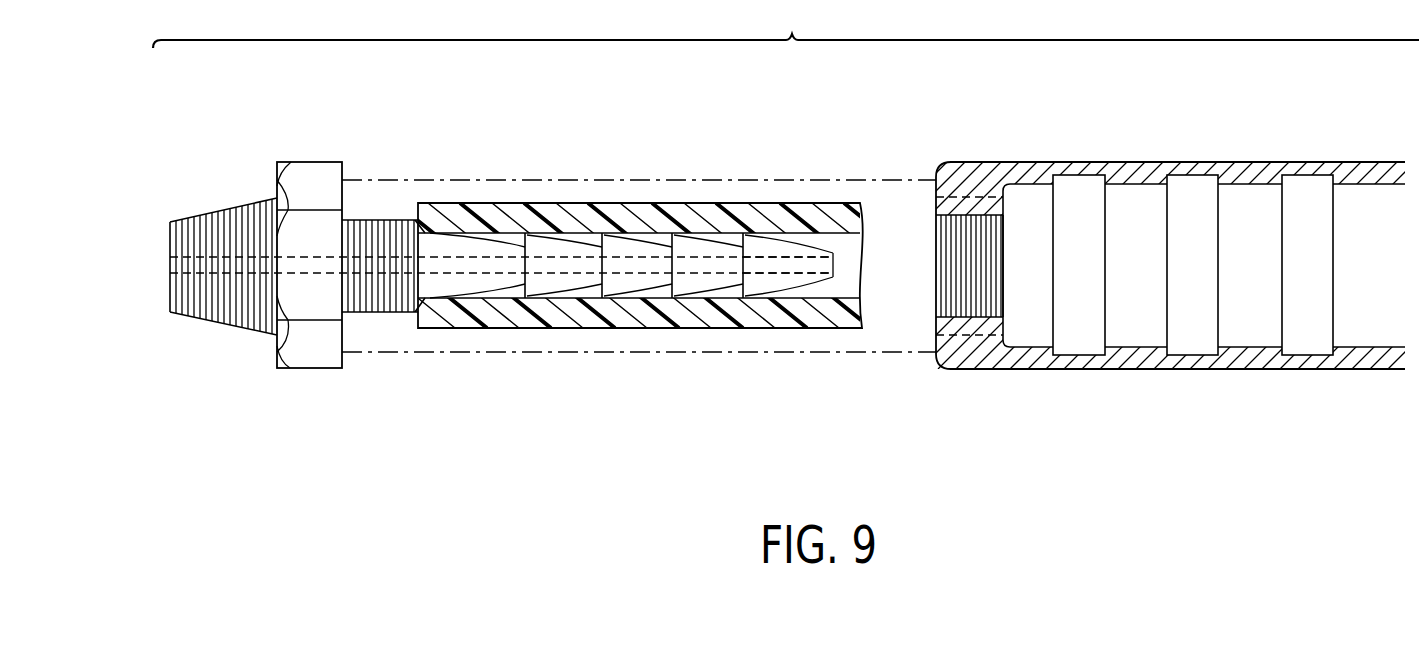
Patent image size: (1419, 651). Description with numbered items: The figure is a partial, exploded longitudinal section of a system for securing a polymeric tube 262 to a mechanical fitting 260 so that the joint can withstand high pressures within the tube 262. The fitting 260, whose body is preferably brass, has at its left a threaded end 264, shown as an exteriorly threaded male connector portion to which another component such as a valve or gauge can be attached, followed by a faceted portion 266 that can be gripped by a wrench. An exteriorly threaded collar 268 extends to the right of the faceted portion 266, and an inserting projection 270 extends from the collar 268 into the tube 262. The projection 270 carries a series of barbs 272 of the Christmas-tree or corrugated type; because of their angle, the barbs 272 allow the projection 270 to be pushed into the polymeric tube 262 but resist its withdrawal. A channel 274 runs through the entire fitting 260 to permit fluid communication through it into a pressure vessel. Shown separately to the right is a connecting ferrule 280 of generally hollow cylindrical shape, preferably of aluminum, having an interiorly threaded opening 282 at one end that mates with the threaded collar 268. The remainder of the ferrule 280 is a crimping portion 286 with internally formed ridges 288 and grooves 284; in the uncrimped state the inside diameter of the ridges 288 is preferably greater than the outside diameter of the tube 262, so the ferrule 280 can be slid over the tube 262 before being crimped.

The mechanical fitting 260 is at (297, 270).
The polymeric tube 262 is at (548, 328).
The threaded end 264 is at (225, 325).
The faceted portion 266 is at (297, 370).
The exteriorly threaded collar 268 is at (383, 219).
The inserting projection 270 is at (803, 283).
The barbs 272 is at (737, 287).
The channel 274 is at (768, 263).
The connecting ferrule 280 is at (1079, 268).
The interiorly threaded opening 282 is at (950, 225).
The grooves 284 is at (1185, 175).
The crimping portion 286 is at (1178, 368).
The ridges 288 is at (1150, 184).